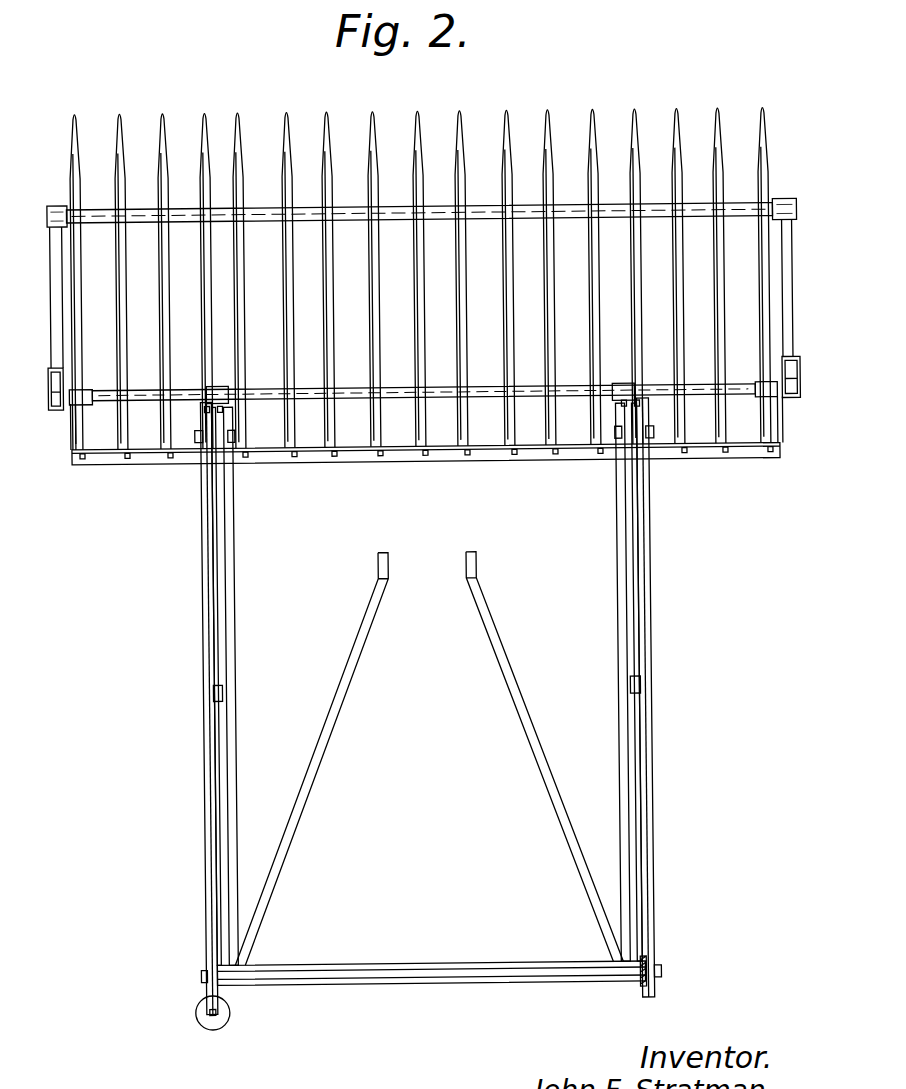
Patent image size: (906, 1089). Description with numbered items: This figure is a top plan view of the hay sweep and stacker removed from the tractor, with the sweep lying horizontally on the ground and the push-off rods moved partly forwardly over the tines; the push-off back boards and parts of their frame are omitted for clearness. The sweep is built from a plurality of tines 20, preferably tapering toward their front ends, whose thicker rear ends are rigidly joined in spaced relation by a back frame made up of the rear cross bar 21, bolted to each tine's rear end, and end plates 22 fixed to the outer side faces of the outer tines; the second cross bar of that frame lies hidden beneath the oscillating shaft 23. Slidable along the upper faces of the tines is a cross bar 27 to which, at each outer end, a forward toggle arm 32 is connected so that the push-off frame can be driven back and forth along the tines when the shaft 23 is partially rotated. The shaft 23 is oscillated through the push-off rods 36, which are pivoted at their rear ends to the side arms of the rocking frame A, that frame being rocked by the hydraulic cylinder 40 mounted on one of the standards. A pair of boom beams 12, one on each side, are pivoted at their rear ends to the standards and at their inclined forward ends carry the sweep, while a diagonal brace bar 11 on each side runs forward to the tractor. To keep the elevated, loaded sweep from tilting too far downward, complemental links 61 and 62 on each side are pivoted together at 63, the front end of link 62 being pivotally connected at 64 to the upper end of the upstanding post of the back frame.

The tines 20 is at (332, 124).
The cross bar 27 is at (394, 206).
The forward toggle arm 32 is at (53, 262).
The oscillating shaft 23 is at (348, 387).
The rear cross bar 21 is at (402, 461).
The end plates 22 is at (72, 418).
The push-off rods 36 is at (202, 570).
The link 61 is at (213, 812).
The link 62 is at (215, 600).
The boom beams 12 is at (234, 666).
The pivot 63 is at (212, 690).
The diagonal brace bar 11 is at (330, 742).
The pivotal connection 64 is at (228, 406).
The rocking frame A is at (200, 438).
The hydraulic cylinder 40 is at (196, 1006).